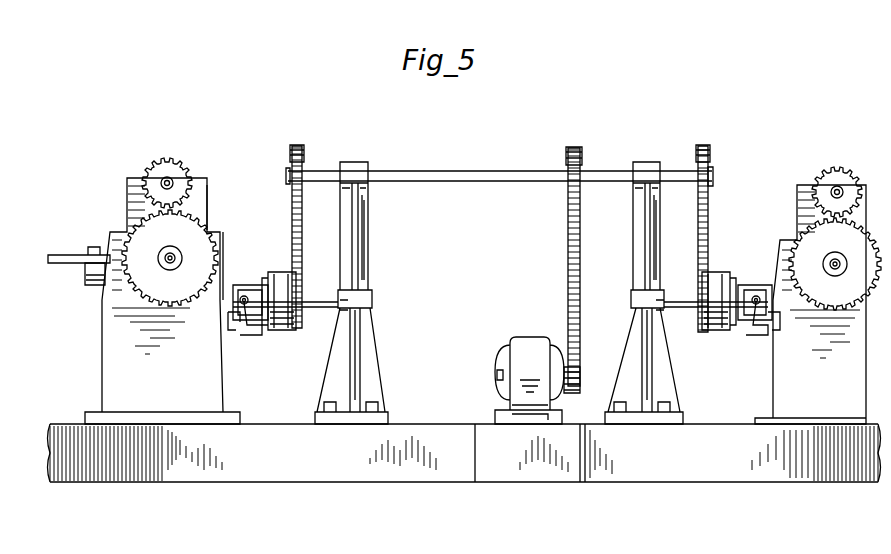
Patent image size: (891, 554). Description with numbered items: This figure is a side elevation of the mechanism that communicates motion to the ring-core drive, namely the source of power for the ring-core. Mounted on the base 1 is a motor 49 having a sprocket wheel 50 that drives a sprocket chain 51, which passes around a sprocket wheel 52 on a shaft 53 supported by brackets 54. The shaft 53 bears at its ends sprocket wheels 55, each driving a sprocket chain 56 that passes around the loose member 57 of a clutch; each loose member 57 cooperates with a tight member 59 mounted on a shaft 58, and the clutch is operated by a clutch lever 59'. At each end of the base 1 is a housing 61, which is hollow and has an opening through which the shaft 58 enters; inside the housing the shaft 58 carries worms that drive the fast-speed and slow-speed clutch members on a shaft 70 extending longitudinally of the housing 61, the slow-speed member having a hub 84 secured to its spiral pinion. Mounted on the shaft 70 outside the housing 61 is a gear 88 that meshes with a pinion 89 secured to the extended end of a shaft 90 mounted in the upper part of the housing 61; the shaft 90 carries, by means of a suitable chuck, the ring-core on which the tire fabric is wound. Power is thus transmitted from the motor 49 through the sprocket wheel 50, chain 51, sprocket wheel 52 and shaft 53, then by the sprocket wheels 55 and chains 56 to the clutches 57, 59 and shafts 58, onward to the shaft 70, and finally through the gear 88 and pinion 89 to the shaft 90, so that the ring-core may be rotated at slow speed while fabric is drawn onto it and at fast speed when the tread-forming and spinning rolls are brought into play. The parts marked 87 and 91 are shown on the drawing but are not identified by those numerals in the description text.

The base 1 is at (464, 453).
The motor 49 is at (529, 380).
The sprocket wheel 50 is at (578, 375).
The sprocket chain 51 is at (568, 272).
The sprocket wheel 52 is at (569, 162).
The shaft 53 is at (463, 176).
The brackets 54 is at (364, 250).
The sprocket wheels 55 is at (293, 156).
The sprocket chains 56 is at (293, 209).
The loose clutch member 57 is at (284, 331).
The shaft 58 is at (318, 298).
The tight clutch member 59 is at (250, 283).
The clutch lever 59' is at (250, 329).
The housing 61 is at (162, 301).
The shaft 70 is at (167, 252).
The hub 84 is at (68, 260).
The bracket 87 is at (92, 287).
The gear 88 is at (170, 258).
The pinion 89 is at (178, 175).
The shaft 90 is at (163, 180).
The rack 91 is at (210, 203).